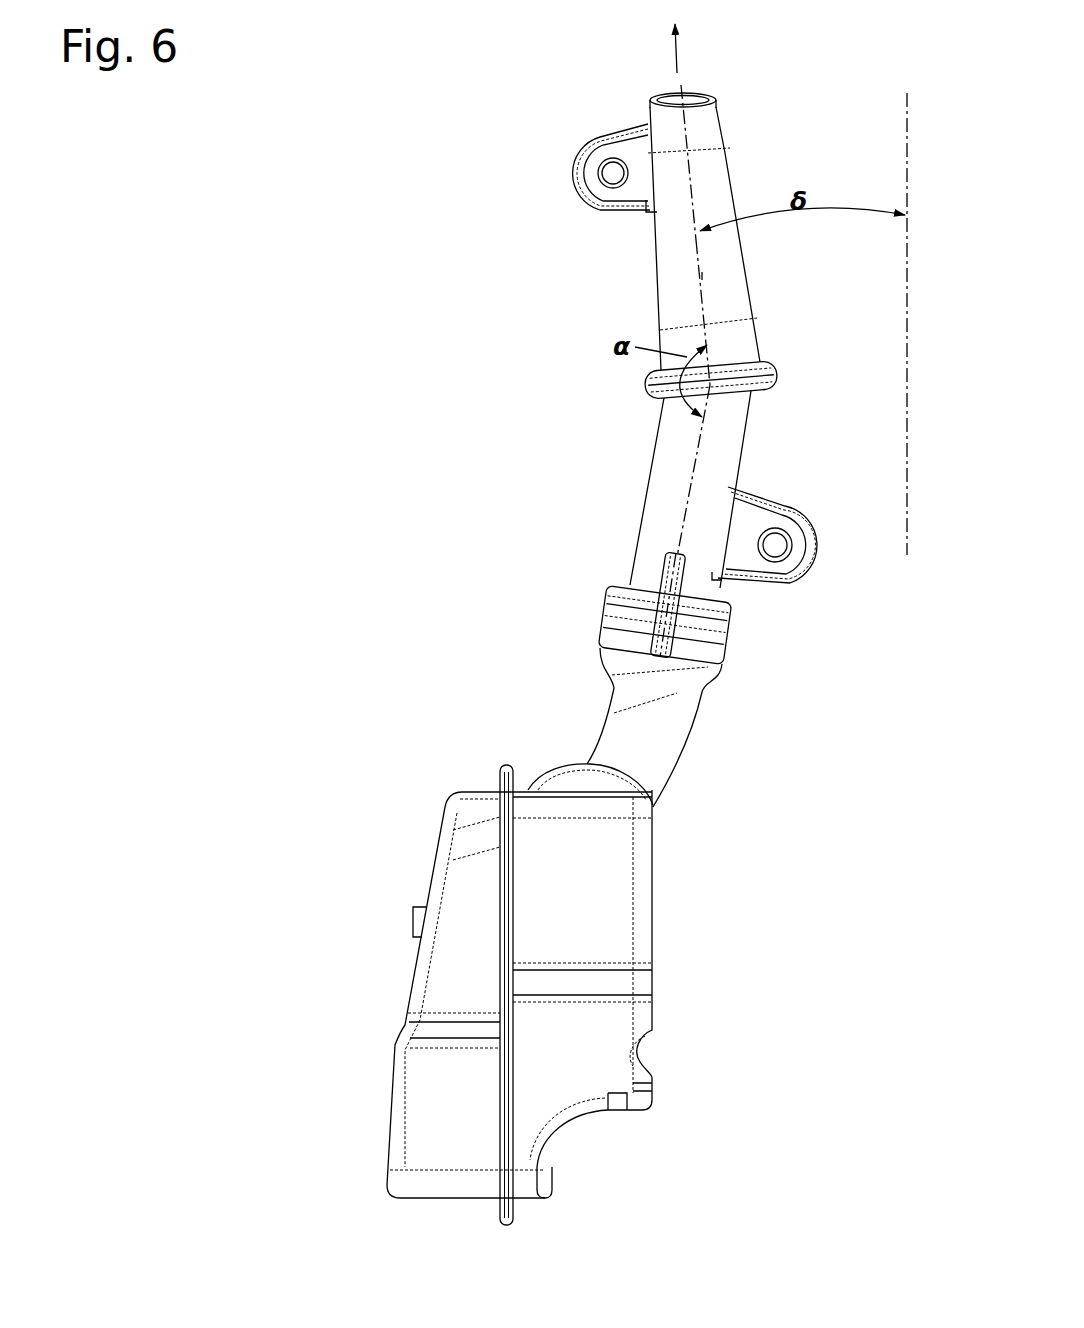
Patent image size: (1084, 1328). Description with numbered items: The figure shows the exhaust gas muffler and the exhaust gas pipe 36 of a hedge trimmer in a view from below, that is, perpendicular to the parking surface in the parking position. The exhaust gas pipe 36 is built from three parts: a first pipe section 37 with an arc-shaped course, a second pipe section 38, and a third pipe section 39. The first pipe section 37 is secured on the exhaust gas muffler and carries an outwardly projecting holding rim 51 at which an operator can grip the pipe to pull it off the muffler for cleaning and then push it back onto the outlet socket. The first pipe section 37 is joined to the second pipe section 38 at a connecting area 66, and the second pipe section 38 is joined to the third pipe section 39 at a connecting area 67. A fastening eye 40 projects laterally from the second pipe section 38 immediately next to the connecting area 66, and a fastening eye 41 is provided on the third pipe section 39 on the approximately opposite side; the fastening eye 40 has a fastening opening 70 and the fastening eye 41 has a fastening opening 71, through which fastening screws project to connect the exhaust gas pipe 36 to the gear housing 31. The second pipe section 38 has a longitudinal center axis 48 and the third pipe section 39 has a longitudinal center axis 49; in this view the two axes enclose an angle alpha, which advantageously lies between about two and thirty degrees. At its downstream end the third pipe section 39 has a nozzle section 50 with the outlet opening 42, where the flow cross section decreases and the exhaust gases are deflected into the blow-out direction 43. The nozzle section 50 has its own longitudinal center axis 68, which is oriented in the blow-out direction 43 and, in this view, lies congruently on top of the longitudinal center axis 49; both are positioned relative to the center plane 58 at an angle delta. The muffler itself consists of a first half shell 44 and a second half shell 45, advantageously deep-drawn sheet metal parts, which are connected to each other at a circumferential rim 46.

The gear housing 31 is at (428, 862).
The exhaust gas pipe 36 is at (752, 421).
The first pipe section 37 is at (676, 751).
The second pipe section 38 is at (640, 540).
The third pipe section 39 is at (664, 245).
The fastening eye 40 is at (790, 528).
The fastening eye 41 is at (597, 160).
The outlet opening 42 is at (690, 93).
The blow-out direction 43 is at (690, 48).
The first half shell 44 is at (436, 963).
The second half shell 45 is at (630, 983).
The circumferential rim 46 is at (505, 780).
The longitudinal center axis 48 is at (688, 483).
The longitudinal center axis 49 is at (702, 276).
The nozzle section 50 is at (713, 121).
The holding rim 51 is at (570, 778).
The center plane 58 is at (905, 290).
The connecting area 66 is at (607, 585).
The connecting area 67 is at (640, 377).
The longitudinal center axis 68 is at (688, 128).
The fastening opening 70 is at (777, 548).
The fastening opening 71 is at (612, 178).